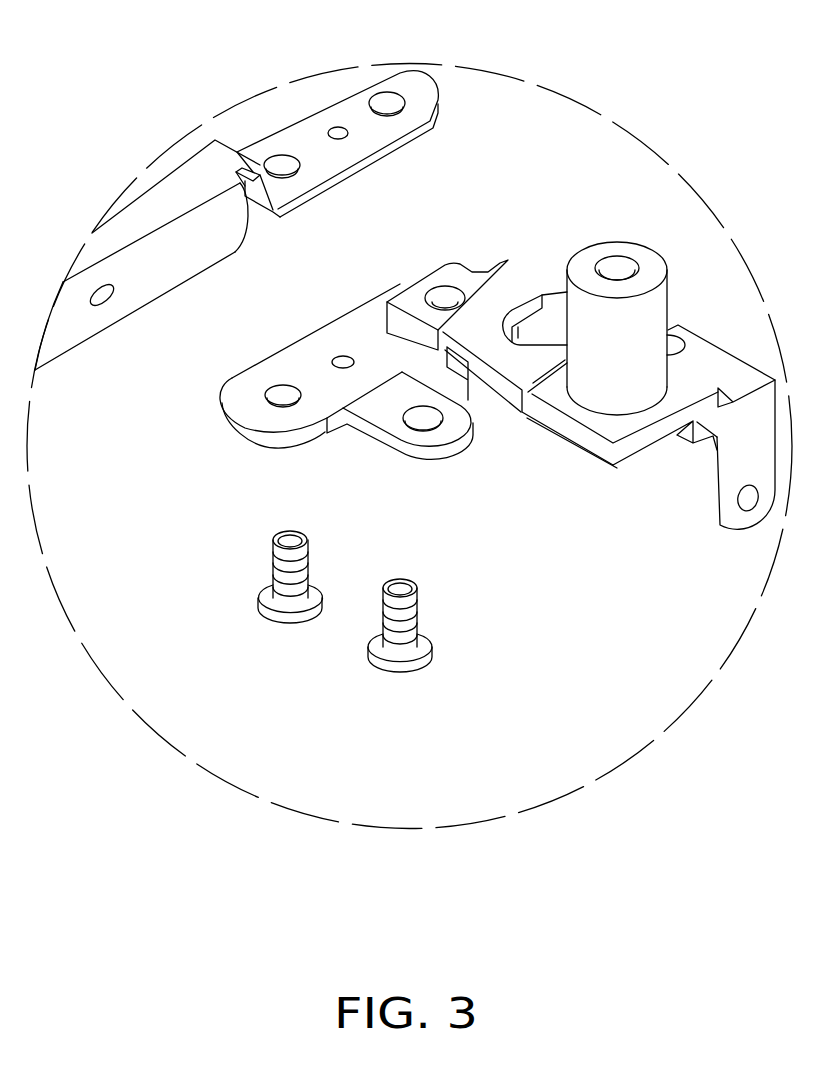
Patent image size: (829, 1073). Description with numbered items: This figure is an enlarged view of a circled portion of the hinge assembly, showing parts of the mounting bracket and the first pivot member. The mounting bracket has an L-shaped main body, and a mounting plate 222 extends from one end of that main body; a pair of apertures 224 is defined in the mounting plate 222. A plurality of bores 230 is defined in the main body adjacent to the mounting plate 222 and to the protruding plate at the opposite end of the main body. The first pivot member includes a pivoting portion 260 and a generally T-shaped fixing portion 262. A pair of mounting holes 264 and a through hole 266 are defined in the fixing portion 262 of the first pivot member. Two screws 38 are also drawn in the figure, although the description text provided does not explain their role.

The screws 38 is at (400, 647).
The mounting plate 222 is at (388, 115).
The apertures 224 is at (280, 170).
The bores 230 is at (102, 307).
The pivoting portion 260 is at (694, 487).
The fixing portion 262 is at (293, 397).
The mounting holes 264 is at (283, 396).
The through hole 266 is at (423, 418).